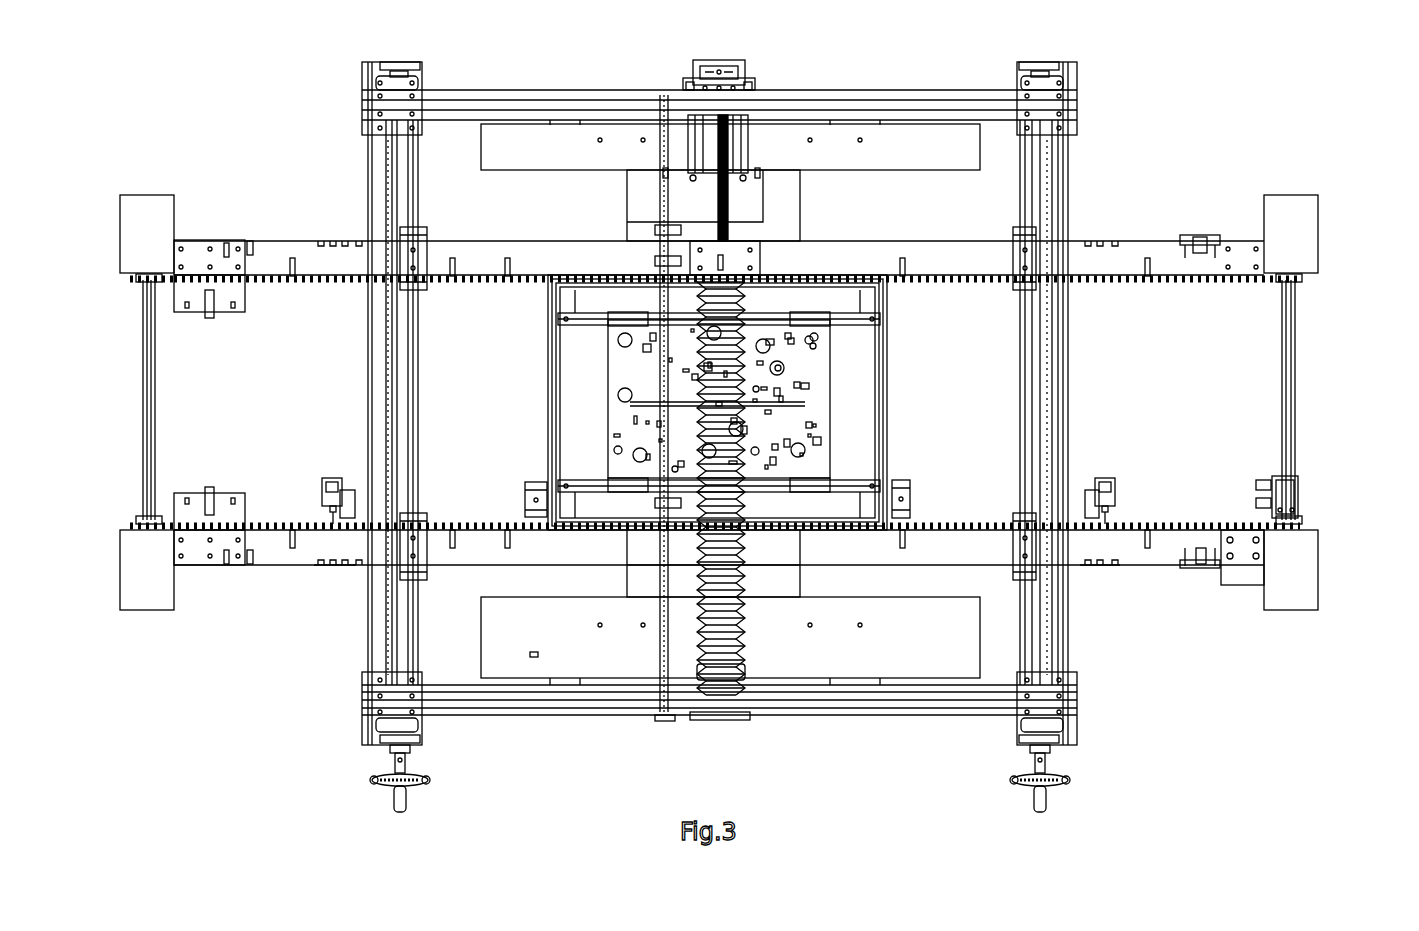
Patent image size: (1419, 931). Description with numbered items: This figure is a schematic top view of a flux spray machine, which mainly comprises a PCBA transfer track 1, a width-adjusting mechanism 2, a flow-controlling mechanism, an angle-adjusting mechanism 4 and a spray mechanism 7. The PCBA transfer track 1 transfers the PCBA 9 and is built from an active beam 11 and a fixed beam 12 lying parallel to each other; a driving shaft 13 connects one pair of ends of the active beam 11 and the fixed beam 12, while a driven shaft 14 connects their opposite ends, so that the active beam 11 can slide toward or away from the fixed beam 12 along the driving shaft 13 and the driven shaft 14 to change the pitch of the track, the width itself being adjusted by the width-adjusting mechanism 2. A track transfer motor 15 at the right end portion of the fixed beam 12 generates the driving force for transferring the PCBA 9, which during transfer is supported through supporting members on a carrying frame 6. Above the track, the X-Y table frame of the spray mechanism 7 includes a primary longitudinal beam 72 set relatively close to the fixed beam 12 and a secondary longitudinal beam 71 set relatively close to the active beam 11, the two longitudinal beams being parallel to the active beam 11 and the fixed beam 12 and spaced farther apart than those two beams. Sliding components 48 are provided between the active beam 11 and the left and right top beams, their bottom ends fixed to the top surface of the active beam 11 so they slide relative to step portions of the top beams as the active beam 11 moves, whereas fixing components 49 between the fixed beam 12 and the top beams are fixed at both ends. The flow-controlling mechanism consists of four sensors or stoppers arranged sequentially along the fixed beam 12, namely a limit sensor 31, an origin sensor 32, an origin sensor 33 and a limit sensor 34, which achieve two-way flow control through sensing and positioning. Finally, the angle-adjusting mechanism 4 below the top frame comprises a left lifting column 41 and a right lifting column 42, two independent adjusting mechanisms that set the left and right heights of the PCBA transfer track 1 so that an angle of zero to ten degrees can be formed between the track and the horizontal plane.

The PCBA transfer track 1 is at (285, 585).
The width-adjusting mechanism 2 is at (750, 72).
The angle-adjusting mechanism 4 is at (1085, 730).
The carrying frame 6 is at (887, 398).
The spray mechanism 7 is at (820, 205).
The secondary longitudinal beam 71 is at (935, 155).
The primary longitudinal beam 72 is at (893, 600).
The PCBA 9 is at (817, 425).
The active beam 11 is at (1128, 240).
The fixed beam 12 is at (1160, 555).
The driving shaft 13 is at (1296, 386).
The driven shaft 14 is at (155, 402).
The track transfer motor 15 is at (1305, 505).
The limit sensor 31 is at (325, 483).
The origin sensor 32 is at (535, 495).
The origin sensor 33 is at (903, 488).
The limit sensor 34 is at (1112, 498).
The left lifting column 41 is at (420, 740).
The right lifting column 42 is at (1012, 738).
The sliding component 48 is at (418, 290).
The fixing component 49 is at (420, 580).